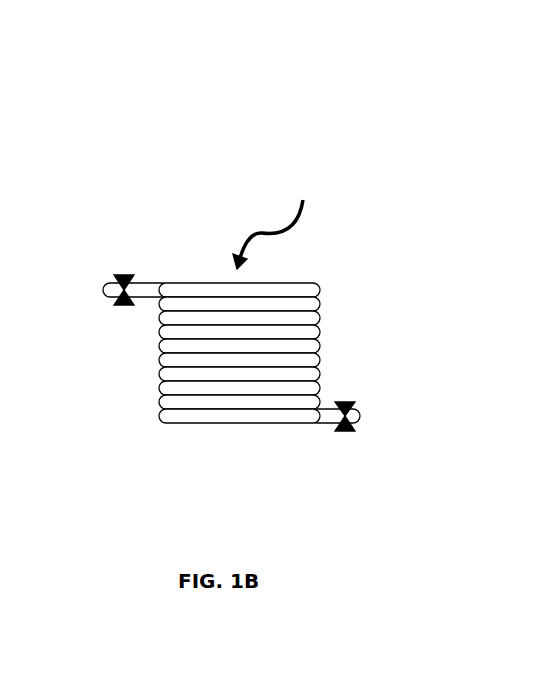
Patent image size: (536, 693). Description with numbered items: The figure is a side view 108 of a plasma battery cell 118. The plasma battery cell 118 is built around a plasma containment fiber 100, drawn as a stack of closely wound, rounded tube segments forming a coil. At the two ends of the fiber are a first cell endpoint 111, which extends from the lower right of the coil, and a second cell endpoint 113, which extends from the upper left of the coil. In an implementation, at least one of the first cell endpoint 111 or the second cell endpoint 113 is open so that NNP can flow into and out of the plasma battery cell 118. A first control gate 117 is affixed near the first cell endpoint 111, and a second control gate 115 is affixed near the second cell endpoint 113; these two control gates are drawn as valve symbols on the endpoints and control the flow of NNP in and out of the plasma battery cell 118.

The side view 108 is at (215, 42).
The plasma containment fiber 100 is at (320, 305).
The first cell endpoint 111 is at (361, 417).
The second cell endpoint 113 is at (103, 290).
The second control gate 115 is at (128, 276).
The first control gate 117 is at (346, 402).
The plasma battery cell 118 is at (278, 218).